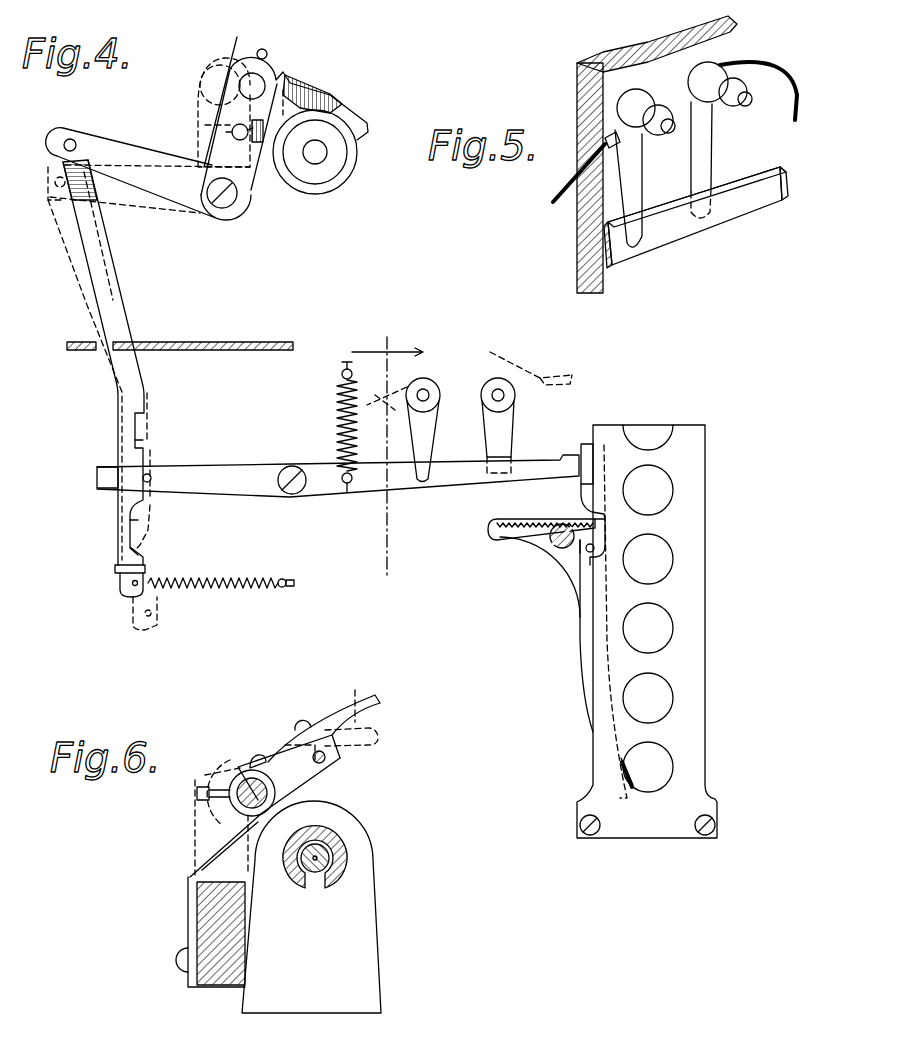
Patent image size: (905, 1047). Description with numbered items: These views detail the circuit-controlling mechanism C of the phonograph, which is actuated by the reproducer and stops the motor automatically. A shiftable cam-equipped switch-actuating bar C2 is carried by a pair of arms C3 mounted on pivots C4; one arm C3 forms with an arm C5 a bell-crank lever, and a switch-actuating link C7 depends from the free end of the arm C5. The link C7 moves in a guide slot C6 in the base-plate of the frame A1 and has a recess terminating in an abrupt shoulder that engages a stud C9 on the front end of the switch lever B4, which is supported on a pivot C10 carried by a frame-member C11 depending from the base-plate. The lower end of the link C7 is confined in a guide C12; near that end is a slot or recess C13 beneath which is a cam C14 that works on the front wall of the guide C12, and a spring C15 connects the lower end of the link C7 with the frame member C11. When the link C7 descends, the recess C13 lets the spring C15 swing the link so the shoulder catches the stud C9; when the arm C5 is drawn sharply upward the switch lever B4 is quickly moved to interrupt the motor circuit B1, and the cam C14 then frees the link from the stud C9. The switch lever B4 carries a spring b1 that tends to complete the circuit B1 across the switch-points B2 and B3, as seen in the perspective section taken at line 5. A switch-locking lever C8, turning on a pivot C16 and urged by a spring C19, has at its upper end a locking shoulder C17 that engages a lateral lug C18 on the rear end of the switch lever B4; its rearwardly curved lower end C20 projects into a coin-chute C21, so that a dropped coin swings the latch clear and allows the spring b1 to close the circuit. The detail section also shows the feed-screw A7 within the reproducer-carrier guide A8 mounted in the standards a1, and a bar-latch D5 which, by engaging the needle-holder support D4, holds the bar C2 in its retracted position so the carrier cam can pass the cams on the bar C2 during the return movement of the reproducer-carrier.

In FIG. 4, the circuit-controlling mechanism C is at (209, 150).
In FIG. 4, the cam-equipped switch-actuating bar C2 is at (252, 72).
In FIG. 6, the cam-equipped switch-actuating bar C2 is at (225, 770).
In FIG. 4, the arms C3 is at (215, 148).
In FIG. 6, the arms C3 is at (216, 832).
In FIG. 4, the pivots C4 is at (232, 204).
In FIG. 6, the pivots C4 is at (196, 893).
In FIG. 4, the bell-crank arm C5 is at (111, 163).
In FIG. 4, the guide slot C6 is at (100, 348).
In FIG. 4, the switch-actuating link C7 is at (122, 312).
In FIG. 4, the switch-locking lever C8 is at (146, 446).
In FIG. 4, the stud C9 is at (144, 481).
In FIG. 4, the pivot C10 is at (293, 494).
In FIG. 5, the frame-member C11 is at (580, 88).
In FIG. 4, the guide C12 is at (116, 570).
In FIG. 4, the slot or recess C13 is at (136, 527).
In FIG. 4, the cam C14 is at (143, 562).
In FIG. 4, the spring C15 is at (237, 580).
In FIG. 4, the pivot C16 is at (586, 550).
In FIG. 4, the locking shoulder C17 is at (586, 486).
In FIG. 4, the lateral lug C18 is at (580, 467).
In FIG. 4, the spring C19 is at (516, 538).
In FIG. 4, the curved lower end C20 is at (618, 757).
In FIG. 4, the coin-chute C21 is at (706, 630).
In FIG. 4, the frame A1 is at (230, 341).
In FIG. 6, the reproducer-carrier feed-screw A7 is at (345, 853).
In FIG. 6, the reproducer-carrier guide A8 is at (330, 871).
In FIG. 6, the standards a1 is at (172, 936).
In FIG. 4, the motor circuit B1 is at (425, 378).
In FIG. 5, the motor circuit B1 is at (775, 68).
In FIG. 4, the switch-point B2 is at (428, 438).
In FIG. 5, the switch-point B2 is at (632, 183).
In FIG. 4, the switch-point B3 is at (509, 434).
In FIG. 5, the switch-point B3 is at (717, 152).
In FIG. 4, the switch lever B4 is at (396, 490).
In FIG. 5, the switch lever B4 is at (748, 212).
In FIG. 4, the spring b1 is at (335, 403).
In FIG. 4, the section line 5 is at (387, 440).
In FIG. 6, the needle-holder support D4 is at (325, 762).
In FIG. 6, the bar-latch D5 is at (352, 702).